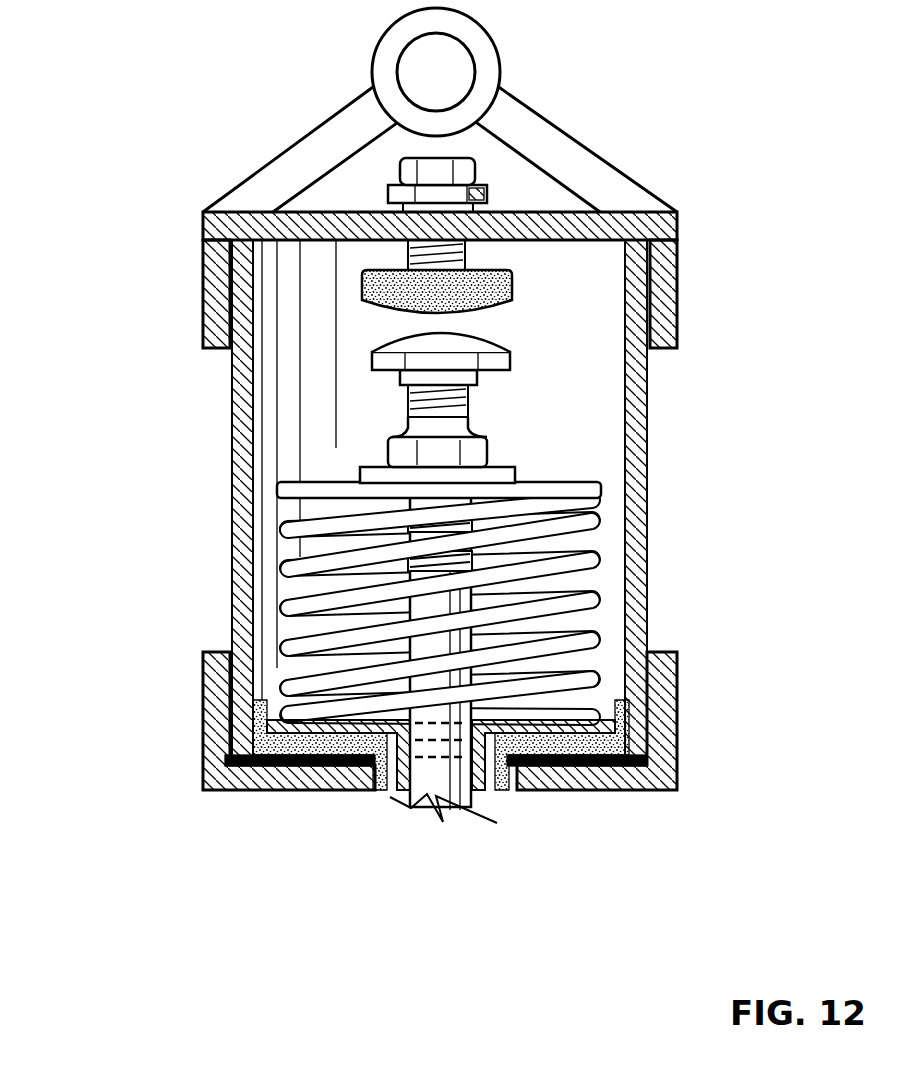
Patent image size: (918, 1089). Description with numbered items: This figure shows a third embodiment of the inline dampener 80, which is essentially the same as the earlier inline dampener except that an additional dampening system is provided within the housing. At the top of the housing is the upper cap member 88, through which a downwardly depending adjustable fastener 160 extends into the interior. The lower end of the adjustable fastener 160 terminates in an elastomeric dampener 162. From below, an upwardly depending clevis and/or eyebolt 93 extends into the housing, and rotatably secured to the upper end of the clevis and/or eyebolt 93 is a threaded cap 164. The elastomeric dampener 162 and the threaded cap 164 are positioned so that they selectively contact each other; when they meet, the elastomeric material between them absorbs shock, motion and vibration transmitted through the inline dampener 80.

The inline dampener 80 is at (417, 451).
The upper cap member 88 is at (203, 238).
The clevis and/or eyebolt 93 is at (410, 797).
The adjustable fastener 160 is at (458, 242).
The elastomeric dampener 162 is at (514, 303).
The threaded cap 164 is at (378, 354).